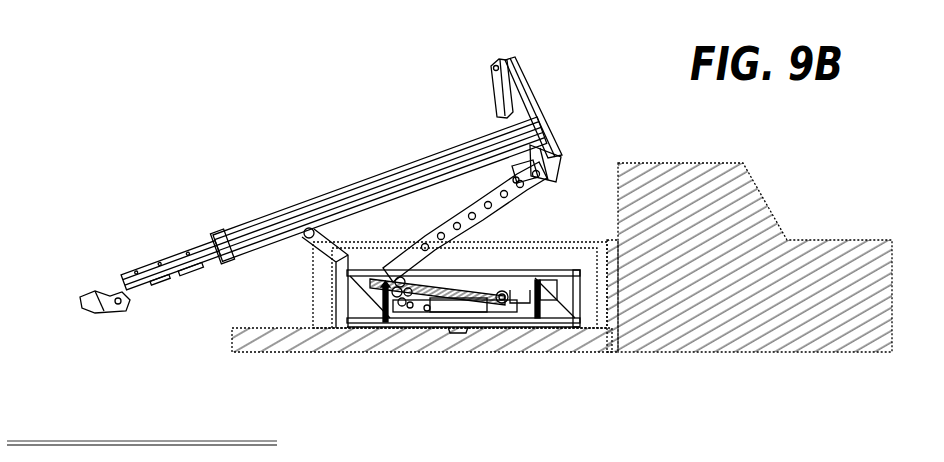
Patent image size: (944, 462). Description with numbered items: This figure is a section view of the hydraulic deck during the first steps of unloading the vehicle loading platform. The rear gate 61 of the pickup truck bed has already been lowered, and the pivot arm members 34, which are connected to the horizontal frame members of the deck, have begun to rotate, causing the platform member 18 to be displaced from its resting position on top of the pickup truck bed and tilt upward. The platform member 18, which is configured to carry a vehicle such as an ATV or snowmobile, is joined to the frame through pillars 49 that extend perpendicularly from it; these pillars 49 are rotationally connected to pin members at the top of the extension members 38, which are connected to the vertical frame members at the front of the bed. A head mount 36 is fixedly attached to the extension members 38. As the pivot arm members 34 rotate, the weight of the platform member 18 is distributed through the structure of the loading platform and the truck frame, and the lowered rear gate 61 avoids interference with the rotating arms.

The platform member 18 is at (360, 170).
The pivot arm members 34 is at (490, 202).
The head mount 36 is at (538, 108).
The extension members 38 is at (518, 100).
The pillars 49 is at (495, 80).
The rear gate 61 is at (280, 328).